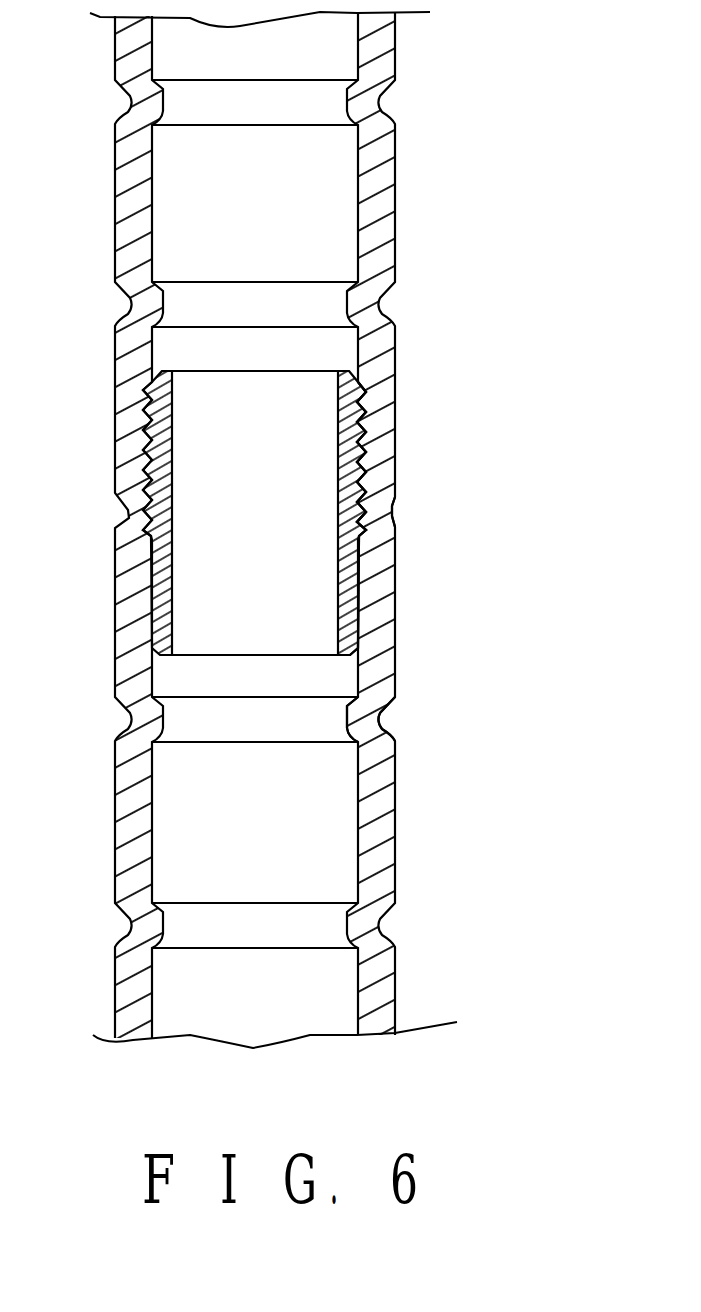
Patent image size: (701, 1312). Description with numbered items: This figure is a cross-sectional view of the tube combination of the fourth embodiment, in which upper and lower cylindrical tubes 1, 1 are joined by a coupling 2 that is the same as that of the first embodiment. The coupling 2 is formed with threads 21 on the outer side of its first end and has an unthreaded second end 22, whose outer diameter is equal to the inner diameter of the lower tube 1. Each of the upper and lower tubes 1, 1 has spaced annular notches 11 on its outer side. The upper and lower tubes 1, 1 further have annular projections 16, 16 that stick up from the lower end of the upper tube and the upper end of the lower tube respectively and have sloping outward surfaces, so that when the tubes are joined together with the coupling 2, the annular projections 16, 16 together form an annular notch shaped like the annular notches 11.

The tube 1 is at (327, 185).
The coupling 2 is at (327, 390).
The threads 21 is at (372, 470).
The annular projection 16 is at (380, 505).
The second end 22 is at (348, 617).
The annular notch 11 is at (382, 717).